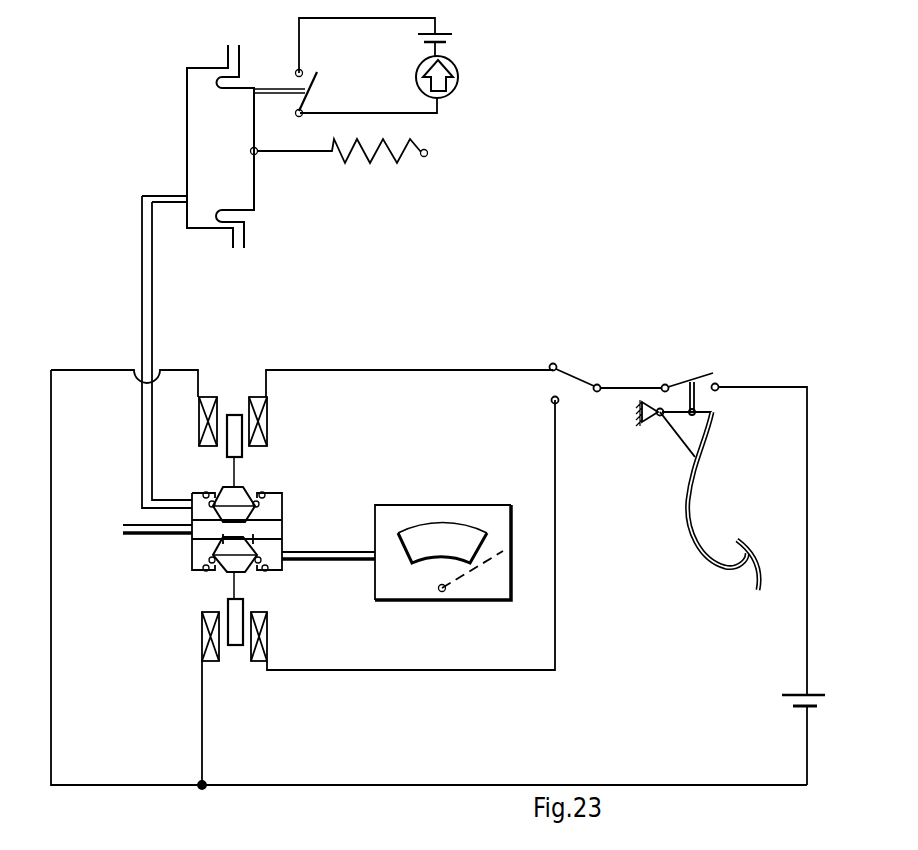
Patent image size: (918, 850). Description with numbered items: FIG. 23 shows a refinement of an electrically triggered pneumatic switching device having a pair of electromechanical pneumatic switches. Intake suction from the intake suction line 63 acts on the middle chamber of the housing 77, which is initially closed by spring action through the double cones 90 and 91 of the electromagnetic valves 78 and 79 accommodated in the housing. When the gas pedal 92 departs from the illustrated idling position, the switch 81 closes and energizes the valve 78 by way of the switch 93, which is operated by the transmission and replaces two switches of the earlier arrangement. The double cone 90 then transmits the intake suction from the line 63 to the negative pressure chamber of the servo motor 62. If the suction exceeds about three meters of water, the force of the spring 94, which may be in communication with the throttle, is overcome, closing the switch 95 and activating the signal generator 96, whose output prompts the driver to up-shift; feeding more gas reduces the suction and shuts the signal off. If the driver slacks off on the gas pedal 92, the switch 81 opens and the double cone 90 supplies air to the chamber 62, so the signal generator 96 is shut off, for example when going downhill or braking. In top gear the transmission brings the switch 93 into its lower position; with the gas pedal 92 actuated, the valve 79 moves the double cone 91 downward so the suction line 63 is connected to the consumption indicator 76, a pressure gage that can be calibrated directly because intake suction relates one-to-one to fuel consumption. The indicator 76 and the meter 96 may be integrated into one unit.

The servo motor 62 is at (186, 85).
The switch 95 is at (317, 88).
The signal generator 96 is at (461, 77).
The spring 94 is at (365, 155).
The intake suction line 63 is at (128, 525).
The electromagnetic valve 78 is at (268, 428).
The electromagnetic valve 79 is at (268, 625).
The housing 77 is at (282, 523).
The double cone 90 is at (257, 489).
The double cone 91 is at (256, 580).
The consumption indicator 76 is at (463, 602).
The switch 93 is at (575, 378).
The switch 81 is at (692, 382).
The gas pedal 92 is at (686, 520).